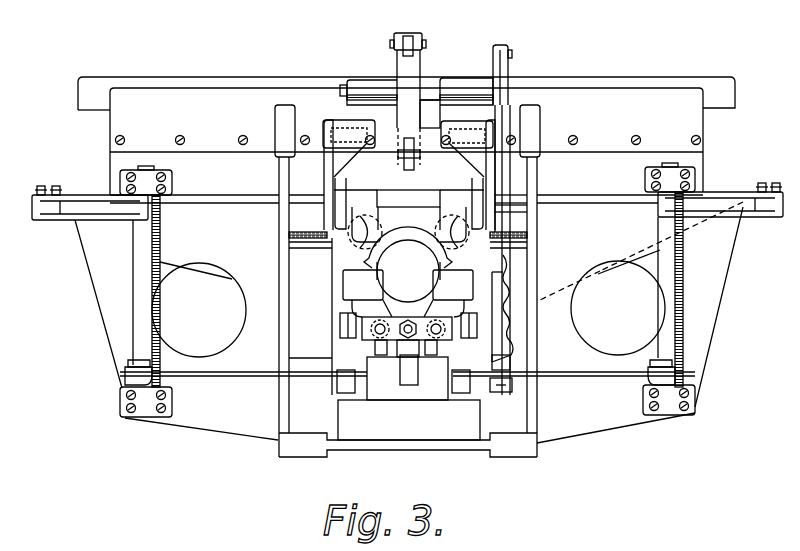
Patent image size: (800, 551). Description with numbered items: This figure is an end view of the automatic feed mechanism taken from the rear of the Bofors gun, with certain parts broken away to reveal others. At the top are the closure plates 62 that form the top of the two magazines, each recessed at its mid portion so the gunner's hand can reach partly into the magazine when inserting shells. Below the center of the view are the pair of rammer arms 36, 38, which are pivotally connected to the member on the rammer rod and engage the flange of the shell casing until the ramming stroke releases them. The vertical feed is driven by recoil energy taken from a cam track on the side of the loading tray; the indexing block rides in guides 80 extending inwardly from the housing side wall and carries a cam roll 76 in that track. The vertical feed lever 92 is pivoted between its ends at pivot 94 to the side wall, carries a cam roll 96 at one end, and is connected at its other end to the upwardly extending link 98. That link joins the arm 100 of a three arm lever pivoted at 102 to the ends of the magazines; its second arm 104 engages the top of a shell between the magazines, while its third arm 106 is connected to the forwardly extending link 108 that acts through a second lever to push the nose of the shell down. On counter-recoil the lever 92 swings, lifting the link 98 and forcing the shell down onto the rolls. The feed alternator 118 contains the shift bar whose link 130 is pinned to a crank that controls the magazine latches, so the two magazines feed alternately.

The rammer arm 36 is at (366, 278).
The rammer arm 38 is at (460, 270).
The closure plate 62 is at (166, 78).
The cam roll 76 is at (340, 327).
The guides 80 is at (296, 301).
The lever 92 is at (498, 342).
The pivot 94 is at (505, 392).
The cam roll 96 is at (478, 326).
The link 98 is at (506, 214).
The arm 100 is at (490, 48).
The pivot 102 is at (363, 85).
The arm 104 is at (417, 117).
The arm 106 is at (412, 60).
The link 108 is at (407, 35).
The feed alternator 118 is at (421, 425).
The link 130 is at (258, 371).